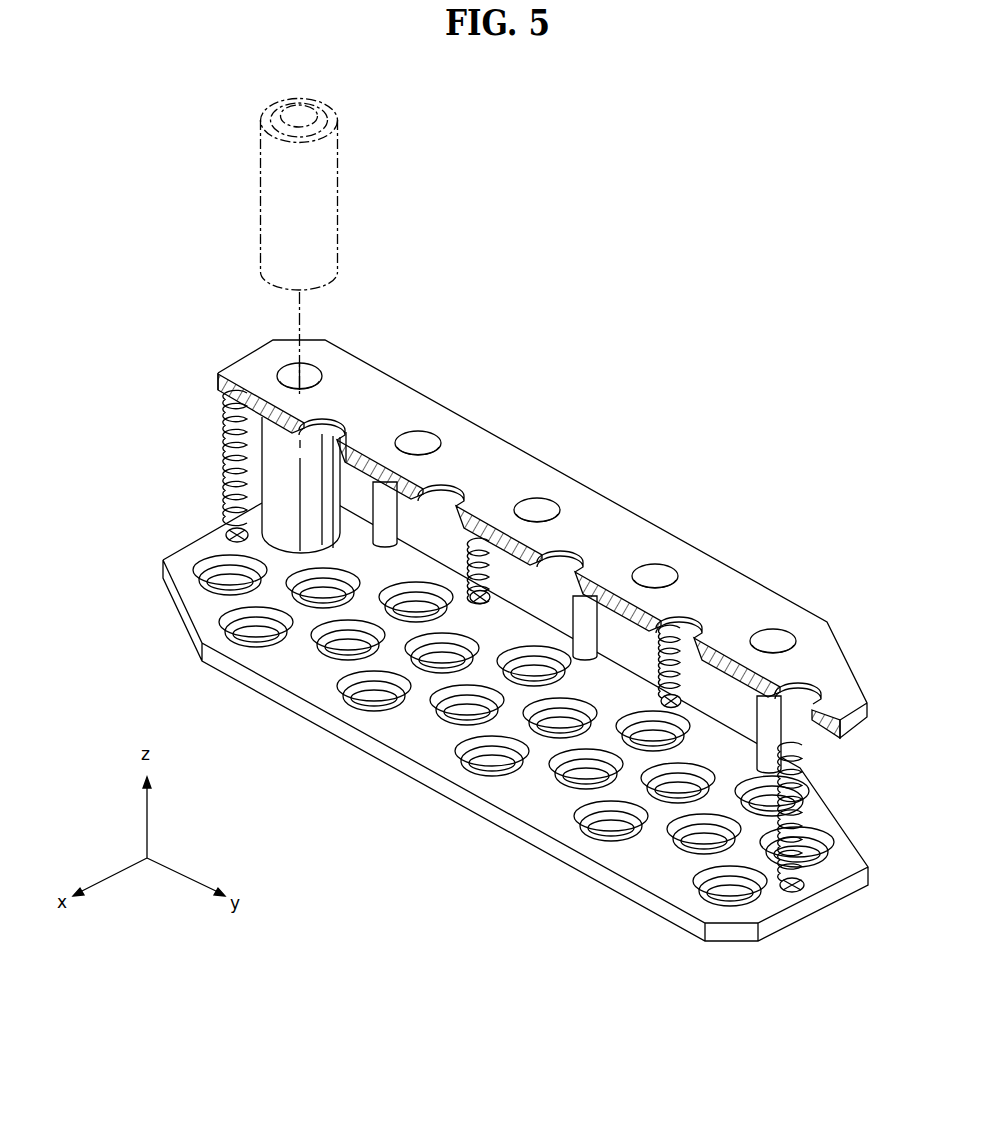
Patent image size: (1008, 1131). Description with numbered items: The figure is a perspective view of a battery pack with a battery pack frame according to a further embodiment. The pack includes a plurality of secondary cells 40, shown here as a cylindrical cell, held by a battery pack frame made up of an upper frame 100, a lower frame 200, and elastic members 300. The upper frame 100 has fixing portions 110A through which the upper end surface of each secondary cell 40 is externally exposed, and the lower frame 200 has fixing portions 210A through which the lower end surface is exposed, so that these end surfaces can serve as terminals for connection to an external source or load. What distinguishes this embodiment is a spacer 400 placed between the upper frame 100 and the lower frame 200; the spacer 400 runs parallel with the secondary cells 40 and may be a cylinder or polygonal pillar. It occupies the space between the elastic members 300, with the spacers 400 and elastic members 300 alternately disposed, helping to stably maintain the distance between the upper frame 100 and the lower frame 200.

The upper frame 100 is at (633, 528).
The fixing portion 110A is at (540, 500).
The lower frame 200 is at (413, 768).
The fixing portion 210A is at (375, 705).
The elastic member 300 is at (233, 487).
The spacer 400 is at (385, 507).
The secondary cell 40 is at (272, 467).